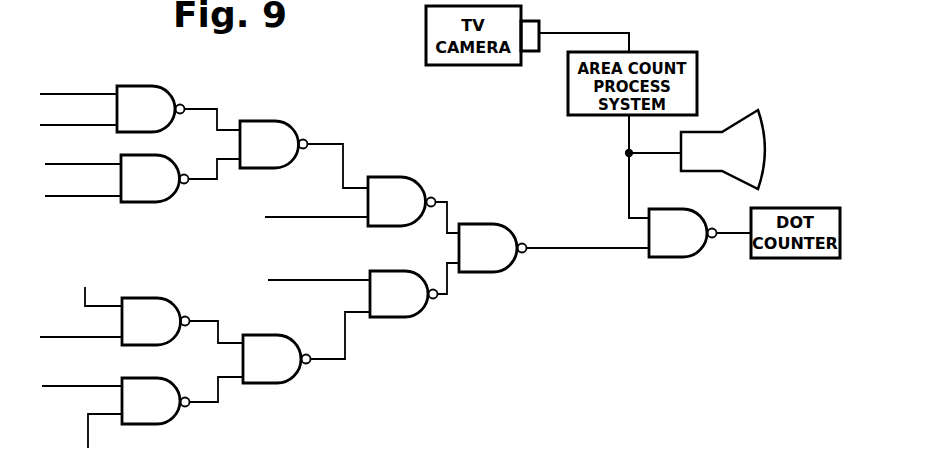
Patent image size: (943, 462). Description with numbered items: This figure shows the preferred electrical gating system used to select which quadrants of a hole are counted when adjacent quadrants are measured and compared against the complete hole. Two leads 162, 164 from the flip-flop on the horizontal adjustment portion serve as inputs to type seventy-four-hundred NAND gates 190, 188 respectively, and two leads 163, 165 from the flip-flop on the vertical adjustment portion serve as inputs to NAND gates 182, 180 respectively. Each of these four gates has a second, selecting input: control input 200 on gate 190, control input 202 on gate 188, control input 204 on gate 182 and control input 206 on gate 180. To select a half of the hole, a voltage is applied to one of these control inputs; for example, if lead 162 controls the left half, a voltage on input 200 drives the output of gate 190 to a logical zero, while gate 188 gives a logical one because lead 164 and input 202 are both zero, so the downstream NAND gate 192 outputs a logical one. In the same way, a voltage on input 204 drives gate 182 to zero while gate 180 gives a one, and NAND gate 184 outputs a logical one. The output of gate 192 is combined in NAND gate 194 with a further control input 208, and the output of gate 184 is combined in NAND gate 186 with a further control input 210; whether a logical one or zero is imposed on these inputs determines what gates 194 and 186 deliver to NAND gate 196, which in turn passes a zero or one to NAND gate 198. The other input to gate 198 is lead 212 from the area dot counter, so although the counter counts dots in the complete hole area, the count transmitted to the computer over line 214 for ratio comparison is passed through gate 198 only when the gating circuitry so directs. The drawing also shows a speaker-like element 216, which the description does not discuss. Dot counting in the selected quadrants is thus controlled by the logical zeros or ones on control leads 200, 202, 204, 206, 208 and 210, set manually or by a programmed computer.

The NAND gate 180 is at (168, 88).
The NAND gate 182 is at (170, 200).
The NAND gate 184 is at (281, 122).
The NAND gate 186 is at (389, 178).
The NAND gate 188 is at (170, 298).
The NAND gate 190 is at (165, 421).
The NAND gate 192 is at (297, 327).
The NAND gate 194 is at (408, 261).
The NAND gate 196 is at (495, 223).
The NAND gate 198 is at (697, 254).
The control input 200 is at (88, 442).
The control input 202 is at (85, 290).
The control input 204 is at (83, 196).
The control input 206 is at (78, 94).
The control input 208 is at (319, 280).
The control input 210 is at (311, 218).
The lead from area dot counter 212 is at (629, 186).
The line to computer 214 is at (733, 228).
The speaker/alarm 216 is at (765, 124).
The lead from horizontal flip-flop 162 is at (80, 386).
The lead from vertical flip-flop 163 is at (76, 164).
The lead from horizontal flip-flop 164 is at (65, 337).
The lead from vertical flip-flop 165 is at (68, 125).